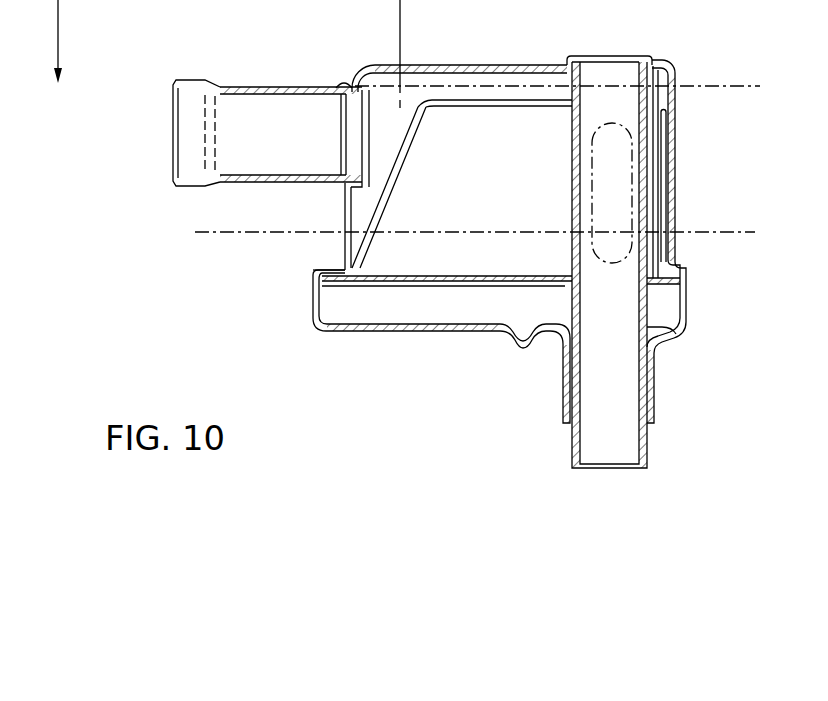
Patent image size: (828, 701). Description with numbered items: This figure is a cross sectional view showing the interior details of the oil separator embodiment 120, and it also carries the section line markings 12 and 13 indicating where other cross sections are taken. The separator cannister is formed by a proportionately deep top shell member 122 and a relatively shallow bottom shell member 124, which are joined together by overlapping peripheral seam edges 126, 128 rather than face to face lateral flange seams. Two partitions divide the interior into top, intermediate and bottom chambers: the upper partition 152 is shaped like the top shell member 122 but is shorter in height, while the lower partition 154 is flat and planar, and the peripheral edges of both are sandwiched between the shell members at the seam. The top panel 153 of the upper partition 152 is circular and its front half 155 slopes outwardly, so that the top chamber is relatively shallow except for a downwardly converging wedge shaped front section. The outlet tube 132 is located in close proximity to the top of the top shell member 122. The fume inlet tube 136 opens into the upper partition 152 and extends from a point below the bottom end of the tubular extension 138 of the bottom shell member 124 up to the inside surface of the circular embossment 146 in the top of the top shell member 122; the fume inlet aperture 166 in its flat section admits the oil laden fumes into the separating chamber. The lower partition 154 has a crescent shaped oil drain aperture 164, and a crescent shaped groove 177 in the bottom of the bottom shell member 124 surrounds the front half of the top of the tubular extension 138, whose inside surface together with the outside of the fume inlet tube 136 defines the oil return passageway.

The section line 12- 12 is at (737, 128).
The section line 13- 13 is at (221, 262).
The oil separator embodiment 120 is at (482, 241).
The top shell member 122 is at (345, 214).
The bottom shell member 124 is at (432, 333).
The peripheral seam edge 126 is at (686, 285).
The peripheral seam edge 128 is at (325, 302).
The outlet tube 132 is at (284, 87).
The fume inlet tube 136 is at (645, 266).
The tubular extension 138 is at (655, 383).
The circular embossment 146 is at (620, 44).
The upper partition 152 is at (431, 111).
The top panel 153 is at (463, 108).
The lower partition 154 is at (450, 277).
The front half 155 is at (400, 174).
The oil drain aperture 164 is at (379, 277).
The fume inlet aperture 166 is at (612, 265).
The groove 177 is at (518, 344).